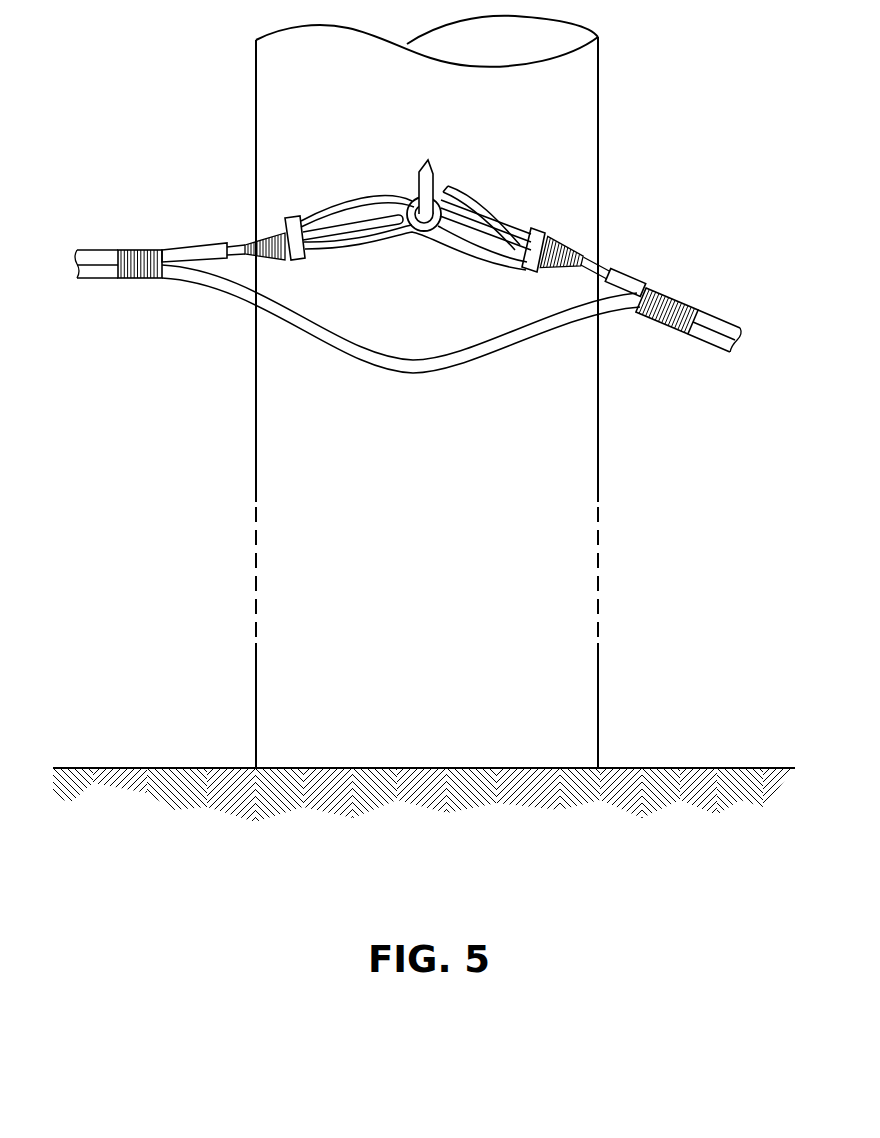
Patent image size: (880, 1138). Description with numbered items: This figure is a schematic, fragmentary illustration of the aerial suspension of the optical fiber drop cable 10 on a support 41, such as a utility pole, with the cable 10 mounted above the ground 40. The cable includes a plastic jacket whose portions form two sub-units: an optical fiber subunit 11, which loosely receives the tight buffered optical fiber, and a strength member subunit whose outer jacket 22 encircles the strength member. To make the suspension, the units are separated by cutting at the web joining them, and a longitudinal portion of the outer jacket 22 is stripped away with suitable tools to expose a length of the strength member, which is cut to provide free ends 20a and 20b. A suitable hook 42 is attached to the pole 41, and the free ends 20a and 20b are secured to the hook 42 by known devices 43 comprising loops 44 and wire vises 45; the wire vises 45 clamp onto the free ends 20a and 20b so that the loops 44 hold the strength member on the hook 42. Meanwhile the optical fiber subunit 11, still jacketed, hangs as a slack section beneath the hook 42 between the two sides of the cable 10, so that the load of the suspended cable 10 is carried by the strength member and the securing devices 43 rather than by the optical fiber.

The optical fiber drop cable 10 is at (103, 285).
The optical fiber subunit 11 is at (413, 373).
The free end of the strength member 20a is at (390, 217).
The free end of the strength member 20b is at (497, 222).
The outer jacket portion 22 is at (213, 242).
The ground 40 is at (712, 768).
The support 41 is at (597, 418).
The hook 42 is at (432, 168).
The securing devices 43 is at (465, 256).
The loops 44 is at (342, 207).
The wire vises 45 is at (291, 215).